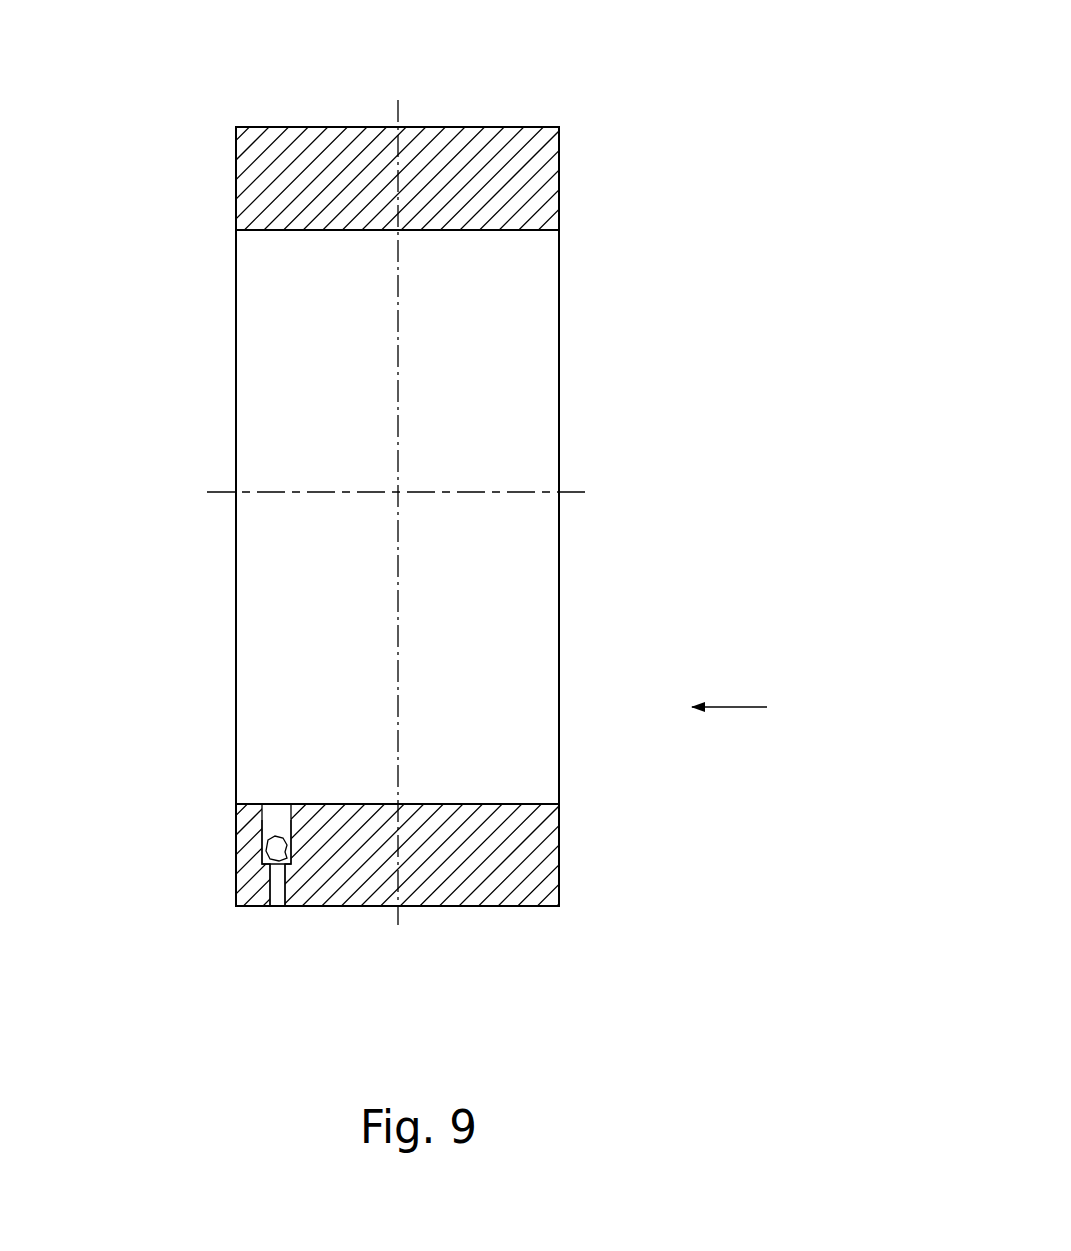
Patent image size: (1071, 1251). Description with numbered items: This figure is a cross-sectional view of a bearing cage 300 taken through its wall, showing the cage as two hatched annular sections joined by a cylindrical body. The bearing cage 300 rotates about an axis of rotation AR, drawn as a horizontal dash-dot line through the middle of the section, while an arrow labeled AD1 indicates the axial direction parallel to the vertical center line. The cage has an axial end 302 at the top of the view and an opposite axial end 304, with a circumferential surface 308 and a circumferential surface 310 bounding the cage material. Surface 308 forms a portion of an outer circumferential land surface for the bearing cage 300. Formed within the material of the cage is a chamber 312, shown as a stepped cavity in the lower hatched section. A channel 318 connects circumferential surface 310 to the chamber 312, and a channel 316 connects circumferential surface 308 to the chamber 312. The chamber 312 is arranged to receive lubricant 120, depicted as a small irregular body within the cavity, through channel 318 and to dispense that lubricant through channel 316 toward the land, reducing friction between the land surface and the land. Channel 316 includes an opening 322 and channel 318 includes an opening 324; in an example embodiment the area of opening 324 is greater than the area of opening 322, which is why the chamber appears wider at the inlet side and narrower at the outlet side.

The bearing cage 300 is at (622, 86).
The axial end 302 is at (233, 169).
The axial end 304 is at (577, 158).
The circumferential surface 310 is at (277, 231).
The chamber 312 is at (280, 829).
The channel 318 is at (271, 819).
The opening 324 is at (273, 805).
The lubricant 120 is at (287, 856).
The channel 316 is at (273, 887).
The opening 322 is at (272, 906).
The circumferential surface 308 is at (295, 906).
The axis of rotation AR is at (226, 490).
The axial direction AD1 is at (737, 707).